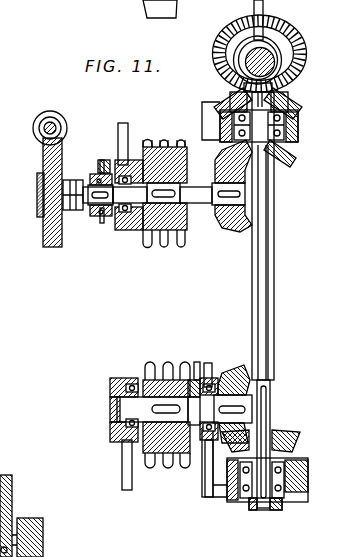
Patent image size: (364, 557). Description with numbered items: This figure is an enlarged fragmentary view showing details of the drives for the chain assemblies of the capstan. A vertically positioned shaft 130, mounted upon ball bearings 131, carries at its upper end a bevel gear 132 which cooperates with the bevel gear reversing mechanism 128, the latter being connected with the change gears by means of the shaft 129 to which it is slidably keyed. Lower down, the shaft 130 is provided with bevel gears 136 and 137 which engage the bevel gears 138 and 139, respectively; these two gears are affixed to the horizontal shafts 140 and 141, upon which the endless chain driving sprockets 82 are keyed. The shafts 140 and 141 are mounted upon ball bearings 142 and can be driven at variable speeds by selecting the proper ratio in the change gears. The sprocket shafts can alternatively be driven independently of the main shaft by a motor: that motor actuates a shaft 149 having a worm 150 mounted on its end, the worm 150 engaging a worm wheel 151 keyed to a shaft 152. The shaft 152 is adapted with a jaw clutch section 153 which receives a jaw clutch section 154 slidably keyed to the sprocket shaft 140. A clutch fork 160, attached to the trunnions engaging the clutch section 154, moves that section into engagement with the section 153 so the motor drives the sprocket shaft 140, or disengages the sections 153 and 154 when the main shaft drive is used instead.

The endless chain driving sprockets 82 is at (168, 348).
The bevel gear reversing mechanism 128 is at (205, 61).
The shaft 129 is at (263, 60).
The vertically positioned shaft 130 is at (275, 290).
The ball bearings 131 is at (293, 120).
The bevel gear 132 is at (297, 101).
The bevel gear 136 is at (292, 160).
The bevel gear 137 is at (292, 437).
The bevel gear 138 is at (237, 230).
The bevel gear 139 is at (240, 375).
The sprocket shaft 140 is at (175, 205).
The shaft 141 is at (123, 415).
The ball bearings 142 is at (127, 214).
The shaft 149 is at (50, 111).
The worm 150 is at (60, 113).
The worm wheel 151 is at (43, 152).
The shaft 152 is at (41, 200).
The jaw clutch section 153 is at (63, 190).
The jaw clutch section 154 is at (89, 212).
The clutch fork 160 is at (101, 160).